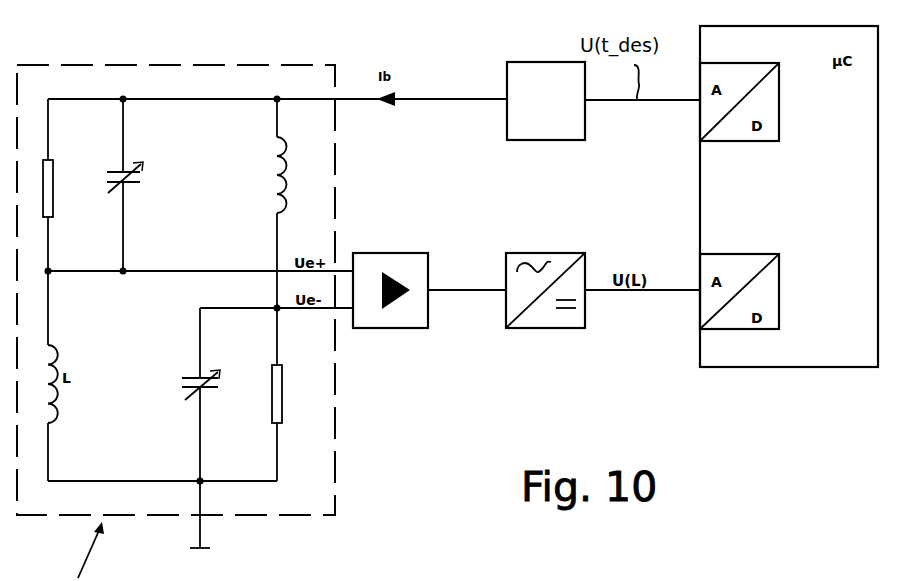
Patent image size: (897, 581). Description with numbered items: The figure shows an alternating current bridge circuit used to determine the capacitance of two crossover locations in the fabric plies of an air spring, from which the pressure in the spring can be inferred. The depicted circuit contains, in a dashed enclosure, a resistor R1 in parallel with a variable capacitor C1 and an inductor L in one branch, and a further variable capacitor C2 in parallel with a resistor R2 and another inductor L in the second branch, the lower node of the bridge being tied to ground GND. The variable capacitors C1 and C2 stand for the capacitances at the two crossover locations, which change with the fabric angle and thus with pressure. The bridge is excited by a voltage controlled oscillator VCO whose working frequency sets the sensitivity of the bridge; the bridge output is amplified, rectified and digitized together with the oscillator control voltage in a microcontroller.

The resistor R1 is at (62, 188).
The variable capacitor C1 is at (137, 176).
The inductor L is at (290, 175).
The resistor R2 is at (290, 394).
The variable capacitor C2 is at (214, 383).
The ground GND is at (200, 524).
The voltage controlled oscillator VCO is at (546, 101).